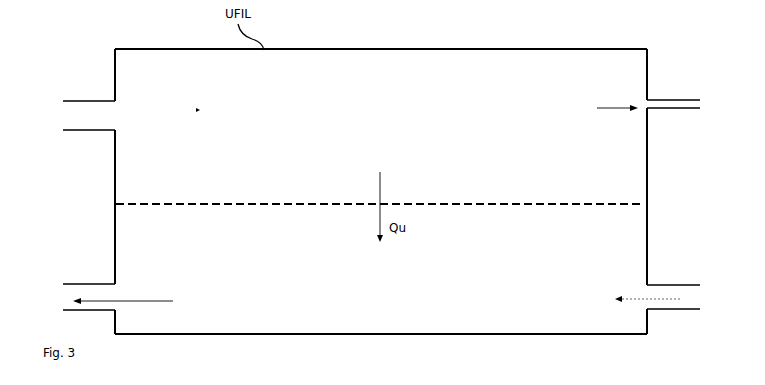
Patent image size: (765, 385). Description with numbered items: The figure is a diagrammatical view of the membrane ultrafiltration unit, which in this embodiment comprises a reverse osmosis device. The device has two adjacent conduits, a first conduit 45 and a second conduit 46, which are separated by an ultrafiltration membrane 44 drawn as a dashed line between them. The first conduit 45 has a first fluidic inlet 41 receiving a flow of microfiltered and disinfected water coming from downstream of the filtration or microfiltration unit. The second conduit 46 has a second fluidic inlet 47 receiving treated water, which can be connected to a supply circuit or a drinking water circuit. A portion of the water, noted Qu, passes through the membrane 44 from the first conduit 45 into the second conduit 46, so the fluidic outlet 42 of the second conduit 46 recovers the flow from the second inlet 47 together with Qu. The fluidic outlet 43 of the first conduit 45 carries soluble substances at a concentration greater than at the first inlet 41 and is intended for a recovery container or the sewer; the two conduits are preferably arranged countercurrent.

The first fluidic inlet 41 is at (80, 100).
The fluidic outlet 42 is at (81, 283).
The fluidic outlet 43 is at (668, 100).
The ultrafiltration membrane 44 is at (318, 204).
The first conduit 45 is at (467, 110).
The second conduit 46 is at (418, 275).
The second fluidic inlet 47 is at (665, 284).